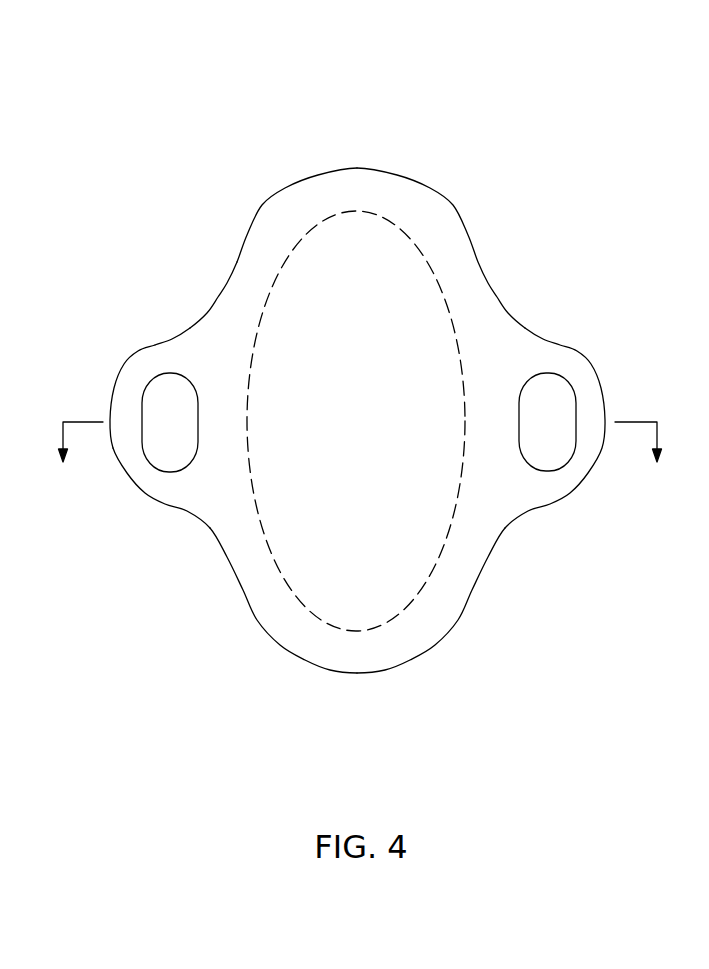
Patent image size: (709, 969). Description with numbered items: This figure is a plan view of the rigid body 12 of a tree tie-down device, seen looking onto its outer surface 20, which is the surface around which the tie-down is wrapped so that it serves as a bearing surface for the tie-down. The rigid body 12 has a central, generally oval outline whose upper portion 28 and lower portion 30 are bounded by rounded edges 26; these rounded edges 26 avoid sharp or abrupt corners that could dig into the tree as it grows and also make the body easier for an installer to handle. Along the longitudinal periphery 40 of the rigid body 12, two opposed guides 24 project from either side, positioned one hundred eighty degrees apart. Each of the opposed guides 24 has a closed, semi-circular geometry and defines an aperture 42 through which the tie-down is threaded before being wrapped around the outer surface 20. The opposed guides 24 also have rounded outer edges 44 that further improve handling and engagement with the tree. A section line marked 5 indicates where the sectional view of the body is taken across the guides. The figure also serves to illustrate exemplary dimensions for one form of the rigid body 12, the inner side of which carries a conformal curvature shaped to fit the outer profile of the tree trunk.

The rigid body 12 is at (513, 230).
The outer surface 20 is at (273, 610).
The opposed guides 24 is at (175, 362).
The rounded edges 26 is at (357, 168).
The upper portion 28 is at (267, 203).
The lower portion 30 is at (473, 627).
The longitudinal periphery 40 is at (218, 297).
The apertures 42 is at (175, 425).
The rounded outer edges 44 is at (113, 393).
The section line 5- 5 is at (360, 442).